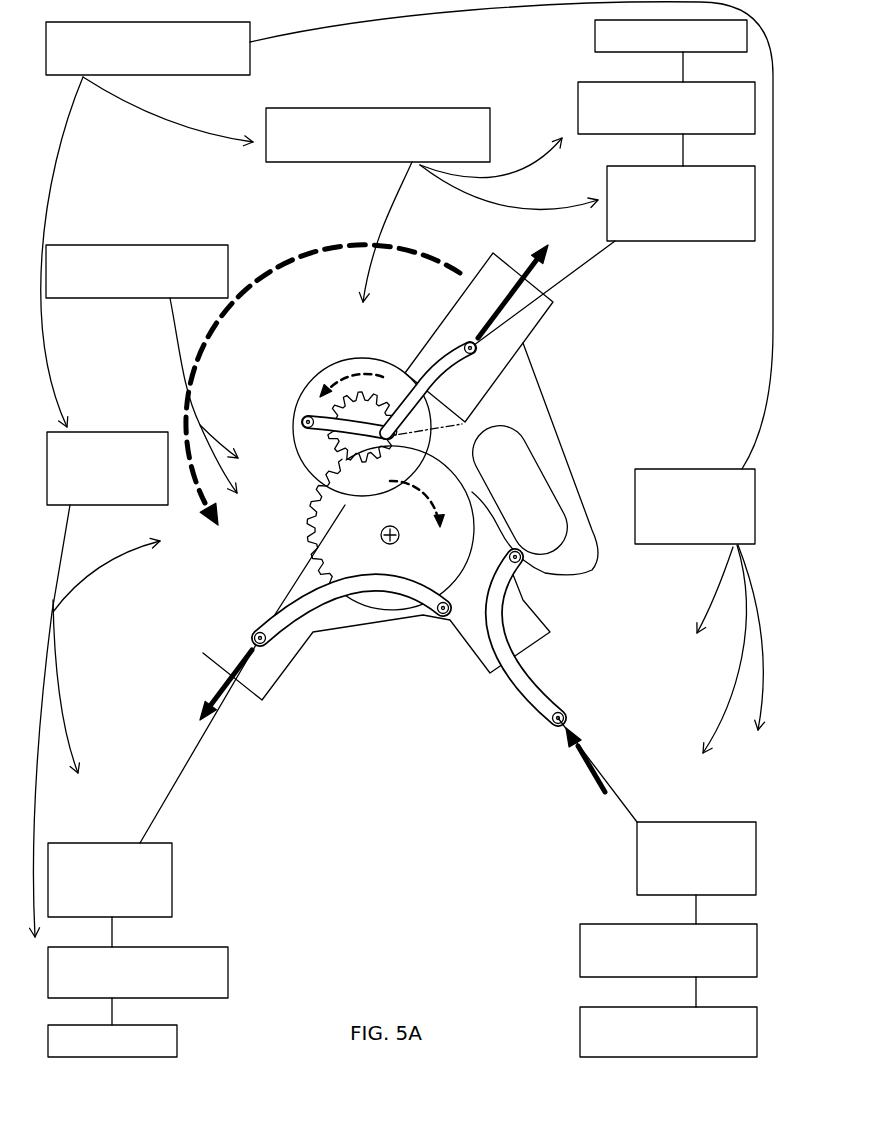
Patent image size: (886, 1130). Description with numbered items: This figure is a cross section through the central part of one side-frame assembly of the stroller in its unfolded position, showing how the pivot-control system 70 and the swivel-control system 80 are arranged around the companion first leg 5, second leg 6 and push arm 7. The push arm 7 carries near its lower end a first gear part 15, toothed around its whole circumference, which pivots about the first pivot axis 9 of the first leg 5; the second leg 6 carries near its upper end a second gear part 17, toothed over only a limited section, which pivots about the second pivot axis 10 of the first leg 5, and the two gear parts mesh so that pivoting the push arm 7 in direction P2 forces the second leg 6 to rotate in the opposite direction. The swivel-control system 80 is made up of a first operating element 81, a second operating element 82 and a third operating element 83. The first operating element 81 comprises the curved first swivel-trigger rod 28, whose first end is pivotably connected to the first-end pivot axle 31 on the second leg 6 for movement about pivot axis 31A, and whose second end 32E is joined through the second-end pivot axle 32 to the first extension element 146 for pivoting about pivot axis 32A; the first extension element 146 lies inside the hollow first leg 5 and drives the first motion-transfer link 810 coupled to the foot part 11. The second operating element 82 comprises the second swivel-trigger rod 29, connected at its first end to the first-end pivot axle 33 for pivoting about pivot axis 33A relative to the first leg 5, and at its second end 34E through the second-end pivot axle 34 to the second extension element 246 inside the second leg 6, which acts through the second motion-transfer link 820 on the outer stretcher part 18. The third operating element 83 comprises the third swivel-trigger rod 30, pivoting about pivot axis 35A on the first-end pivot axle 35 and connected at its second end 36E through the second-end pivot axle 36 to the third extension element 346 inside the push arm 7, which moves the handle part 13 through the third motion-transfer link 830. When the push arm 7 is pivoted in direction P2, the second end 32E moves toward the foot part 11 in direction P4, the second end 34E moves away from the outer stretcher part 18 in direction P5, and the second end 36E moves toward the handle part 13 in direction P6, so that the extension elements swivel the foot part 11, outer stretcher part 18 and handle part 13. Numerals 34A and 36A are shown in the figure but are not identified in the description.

The first leg 5 is at (330, 373).
The second leg 6 is at (528, 632).
The push arm 7 is at (476, 283).
The first pivot axis 9 is at (387, 433).
The second pivot axis 10 is at (383, 540).
The foot part 11 is at (177, 1042).
The handle part 13 is at (595, 36).
The first gear part 15 is at (345, 455).
The second gear part 17 is at (313, 505).
The outer stretcher part 18 is at (580, 1029).
The first swivel-trigger rod 28 is at (293, 603).
The second swivel-trigger rod 29 is at (525, 683).
The third swivel-trigger rod 30 is at (427, 380).
The first-end pivot axle 31 is at (452, 625).
The pivot axis 31A is at (445, 600).
The second-end pivot axle 32 is at (275, 648).
The pivot axis 32A is at (250, 632).
The second end 32E is at (255, 640).
The first-end pivot axle 33 is at (565, 585).
The pivot axis 33A is at (516, 550).
The second-end pivot axle 34 is at (562, 702).
The arrow P5 push direction 34A is at (550, 722).
The second end 34E is at (568, 716).
The first-end pivot axle 35 is at (300, 421).
The pivot axis 35A is at (302, 424).
The second-end pivot axle 36 is at (432, 372).
The third extension link line 36A is at (505, 362).
The second end 36E is at (478, 344).
The pivot-control system 70 is at (83, 245).
The swivel-control system 80 is at (176, 76).
The first operating element 81 is at (107, 432).
The second operating element 82 is at (713, 545).
The third operating element 83 is at (413, 108).
The first extension element 146 is at (118, 843).
The second extension element 246 is at (703, 822).
The third extension element 346 is at (733, 241).
The first motion-transfer link 810 is at (228, 972).
The second motion-transfer link 820 is at (757, 940).
The third motion-transfer link 830 is at (578, 110).
The arrow P2 is at (260, 275).
The arrow P4 is at (215, 700).
The arrow P5 is at (600, 767).
The arrow P6 is at (500, 322).